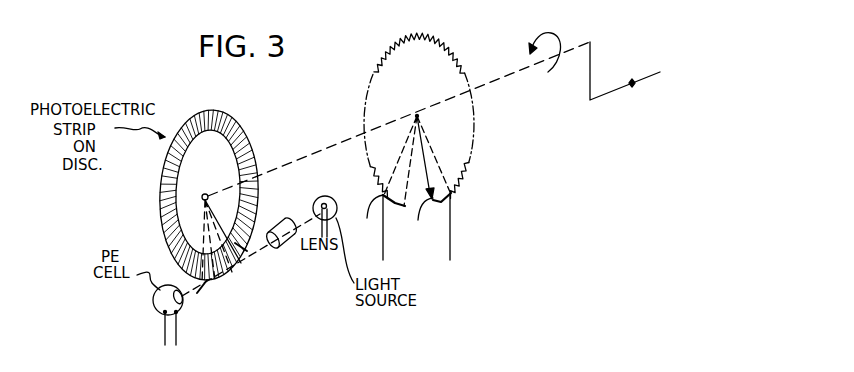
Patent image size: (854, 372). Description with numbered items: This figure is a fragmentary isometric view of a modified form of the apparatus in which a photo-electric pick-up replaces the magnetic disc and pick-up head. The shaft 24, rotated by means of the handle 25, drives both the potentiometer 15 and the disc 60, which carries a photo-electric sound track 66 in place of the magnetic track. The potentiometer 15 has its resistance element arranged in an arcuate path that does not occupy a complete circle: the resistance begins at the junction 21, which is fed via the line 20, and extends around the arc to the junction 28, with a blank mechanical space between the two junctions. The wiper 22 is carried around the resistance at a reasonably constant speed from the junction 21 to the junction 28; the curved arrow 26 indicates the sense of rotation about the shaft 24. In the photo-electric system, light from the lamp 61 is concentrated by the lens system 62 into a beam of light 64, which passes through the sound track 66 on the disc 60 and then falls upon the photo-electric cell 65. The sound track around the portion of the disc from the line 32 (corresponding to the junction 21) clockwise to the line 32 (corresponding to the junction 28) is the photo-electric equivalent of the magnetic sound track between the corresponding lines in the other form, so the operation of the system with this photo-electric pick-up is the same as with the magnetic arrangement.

The potentiometer 15 is at (469, 157).
The line 20 is at (452, 246).
The junction 21 is at (452, 195).
The wiper 22 is at (428, 219).
The shaft 24 is at (302, 150).
The handle 25 is at (591, 75).
The rotation direction arrow 26 is at (556, 35).
The junction 28 is at (379, 218).
The line 32 is at (247, 251).
The disc 60 is at (234, 120).
The lamp 61 is at (329, 197).
The lens system 62 is at (283, 223).
The beam of light 64 is at (243, 258).
The photo-electric cell 65 is at (157, 305).
The sound track 66 is at (239, 143).